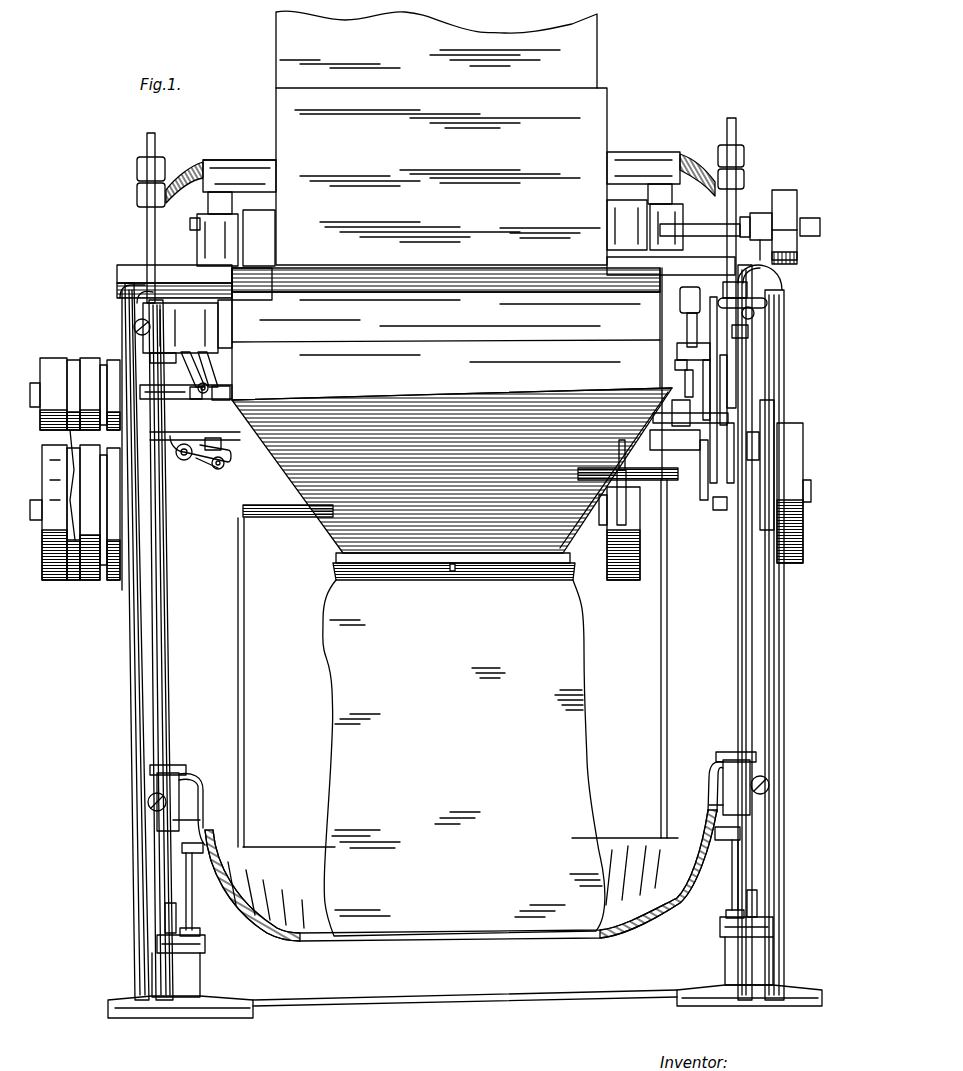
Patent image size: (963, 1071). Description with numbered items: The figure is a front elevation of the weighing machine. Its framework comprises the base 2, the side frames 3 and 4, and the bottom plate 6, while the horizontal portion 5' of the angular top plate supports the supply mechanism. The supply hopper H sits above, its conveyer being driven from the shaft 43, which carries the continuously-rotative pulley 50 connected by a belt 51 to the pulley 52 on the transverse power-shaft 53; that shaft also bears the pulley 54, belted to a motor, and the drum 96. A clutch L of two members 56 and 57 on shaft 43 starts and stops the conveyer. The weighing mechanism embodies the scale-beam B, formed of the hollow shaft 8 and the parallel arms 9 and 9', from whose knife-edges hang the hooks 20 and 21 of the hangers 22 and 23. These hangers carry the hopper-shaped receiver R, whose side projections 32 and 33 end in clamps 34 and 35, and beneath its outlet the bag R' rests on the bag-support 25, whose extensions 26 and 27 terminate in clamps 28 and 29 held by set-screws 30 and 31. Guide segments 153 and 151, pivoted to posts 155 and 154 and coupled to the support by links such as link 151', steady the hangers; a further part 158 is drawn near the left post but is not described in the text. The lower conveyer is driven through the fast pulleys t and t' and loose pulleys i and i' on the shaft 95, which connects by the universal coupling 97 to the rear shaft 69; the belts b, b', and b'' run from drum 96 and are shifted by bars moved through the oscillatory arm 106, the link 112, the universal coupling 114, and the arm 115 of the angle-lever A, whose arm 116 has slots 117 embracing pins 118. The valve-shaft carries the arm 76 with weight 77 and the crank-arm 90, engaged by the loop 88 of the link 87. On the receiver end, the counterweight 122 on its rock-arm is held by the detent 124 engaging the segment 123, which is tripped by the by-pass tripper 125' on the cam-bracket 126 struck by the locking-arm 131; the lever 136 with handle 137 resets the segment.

The hopper H is at (441, 138).
The hopper-shaped receiver R is at (452, 424).
The bag R' is at (464, 758).
The bag-support 25 is at (314, 942).
The side frame 3 is at (228, 592).
The side frame 4 is at (662, 628).
The hanger 22 is at (150, 664).
The hook 20 is at (147, 160).
The hanger 23 is at (740, 628).
The hook 21 is at (735, 130).
The horizontal portion of top plate 5' is at (426, 267).
The projection 32 is at (230, 300).
The scale-beam B is at (233, 204).
The hollow shaft 8 is at (266, 165).
The arm of scale-beam 9 is at (184, 174).
The arm of scale-beam 9' is at (661, 188).
The shaft 43 is at (698, 232).
The pulley 50 is at (790, 212).
The clutch member 56 is at (770, 214).
The clutch-section 57 is at (748, 218).
The clutch L is at (768, 216).
The clamp 34 is at (135, 300).
The oscillatory arm 106 is at (193, 360).
The link 112 is at (212, 362).
The universal coupling device 97 is at (208, 385).
The rear shaft of conveyer 69 is at (230, 389).
The angle-lever A is at (195, 458).
The universal coupling device 114 is at (224, 452).
The arm of angle-lever 115 is at (200, 462).
The power-shaft 53 is at (286, 510).
The fixed pulley t' is at (51, 384).
The loose pulley i' is at (69, 380).
The fixed pulley t is at (90, 384).
The loose pulley i is at (110, 384).
The shaft 95 is at (30, 392).
The drum 96 is at (55, 580).
The belt b'' is at (70, 528).
The belt b' is at (93, 530).
The belt b is at (110, 532).
The clamp 28 is at (170, 782).
The set-screw 30 is at (148, 802).
The lateral extension 26 is at (205, 812).
The guide segment 153 is at (185, 882).
The block 158 is at (167, 918).
The post 155 is at (201, 975).
The base 2 is at (216, 1016).
The bottom plate 6 is at (446, 998).
The clamp 29 is at (748, 762).
The set-screw 31 is at (768, 782).
The lateral extension 27 is at (710, 782).
The link 151' is at (716, 872).
The guide segment 151 is at (769, 913).
The post 154 is at (726, 962).
The projection 33 is at (678, 292).
The valve-actuator or weight 77 is at (680, 300).
The arm 76 is at (688, 330).
The crank-arm 90 is at (678, 352).
The longitudinal slot / loop 117 is at (676, 364).
The pin / link 118 is at (686, 385).
The counterweight 122 is at (672, 410).
The handle 137 is at (760, 298).
The loop 88 is at (752, 313).
The clamp 35 is at (748, 332).
The link 87 is at (717, 352).
The arm of angle-lever / projection 116 is at (710, 378).
The lever 136 is at (727, 390).
The by-pass tripper 125' is at (770, 430).
The belt 51 is at (780, 415).
The cam-bracket 126 is at (760, 446).
The pulley 52 is at (790, 560).
The pulley 54 is at (626, 575).
The detent 124 is at (625, 520).
The segment 123 is at (705, 500).
The locking-arm 131 is at (720, 510).